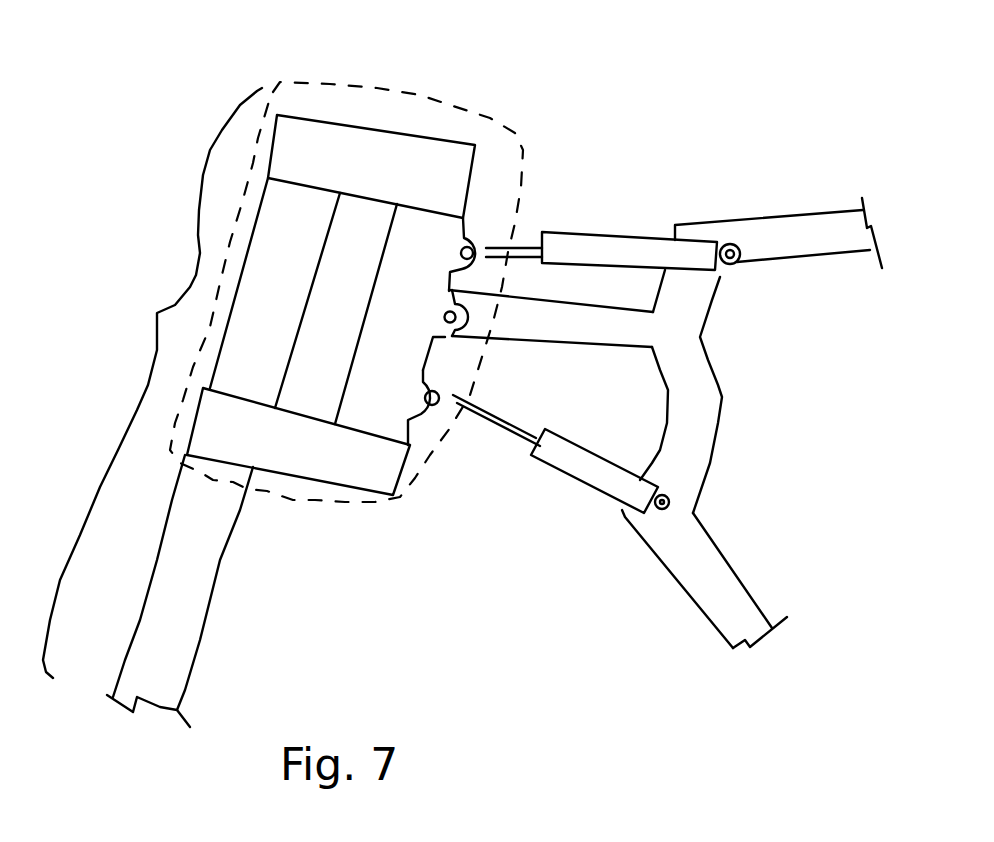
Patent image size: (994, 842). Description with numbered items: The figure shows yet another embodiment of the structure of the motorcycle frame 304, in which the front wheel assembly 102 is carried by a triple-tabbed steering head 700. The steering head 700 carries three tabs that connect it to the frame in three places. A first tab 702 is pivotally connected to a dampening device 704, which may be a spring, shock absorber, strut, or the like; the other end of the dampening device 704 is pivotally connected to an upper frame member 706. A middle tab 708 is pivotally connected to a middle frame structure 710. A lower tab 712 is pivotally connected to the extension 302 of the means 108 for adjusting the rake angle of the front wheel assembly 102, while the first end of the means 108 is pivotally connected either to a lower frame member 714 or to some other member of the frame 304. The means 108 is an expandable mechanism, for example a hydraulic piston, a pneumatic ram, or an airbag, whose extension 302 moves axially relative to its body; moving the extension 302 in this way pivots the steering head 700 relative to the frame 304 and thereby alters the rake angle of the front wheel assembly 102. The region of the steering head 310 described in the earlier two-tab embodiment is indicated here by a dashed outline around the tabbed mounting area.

The front wheel assembly 102 is at (152, 407).
The means for adjusting the rake angle 108 is at (555, 485).
The extension 302 is at (497, 433).
The frame 304 is at (817, 185).
The steering head 310 is at (405, 97).
The triple-tabbed steering head 700 is at (423, 328).
The first tab 702 is at (463, 222).
The dampening device 704 is at (608, 227).
The upper frame member 706 is at (727, 217).
The middle tab 708 is at (453, 338).
The middle frame structure 710 is at (592, 343).
The lower tab 712 is at (423, 453).
The lower frame member 714 is at (718, 552).